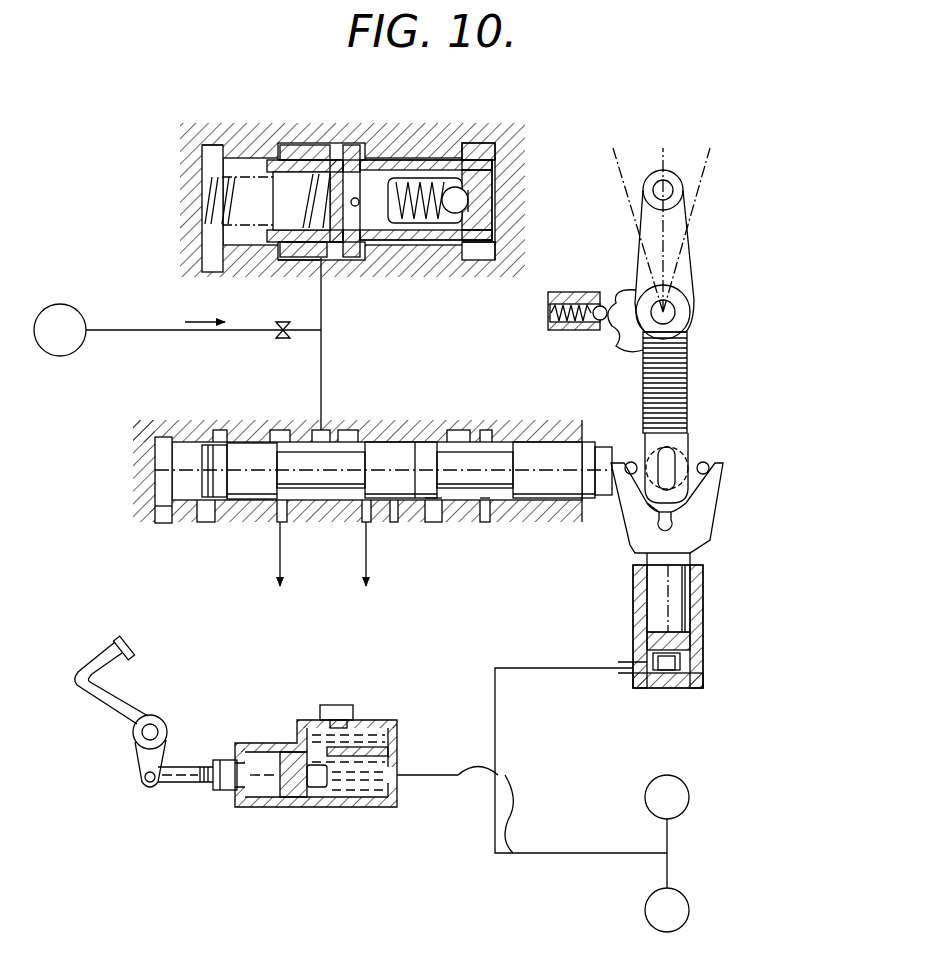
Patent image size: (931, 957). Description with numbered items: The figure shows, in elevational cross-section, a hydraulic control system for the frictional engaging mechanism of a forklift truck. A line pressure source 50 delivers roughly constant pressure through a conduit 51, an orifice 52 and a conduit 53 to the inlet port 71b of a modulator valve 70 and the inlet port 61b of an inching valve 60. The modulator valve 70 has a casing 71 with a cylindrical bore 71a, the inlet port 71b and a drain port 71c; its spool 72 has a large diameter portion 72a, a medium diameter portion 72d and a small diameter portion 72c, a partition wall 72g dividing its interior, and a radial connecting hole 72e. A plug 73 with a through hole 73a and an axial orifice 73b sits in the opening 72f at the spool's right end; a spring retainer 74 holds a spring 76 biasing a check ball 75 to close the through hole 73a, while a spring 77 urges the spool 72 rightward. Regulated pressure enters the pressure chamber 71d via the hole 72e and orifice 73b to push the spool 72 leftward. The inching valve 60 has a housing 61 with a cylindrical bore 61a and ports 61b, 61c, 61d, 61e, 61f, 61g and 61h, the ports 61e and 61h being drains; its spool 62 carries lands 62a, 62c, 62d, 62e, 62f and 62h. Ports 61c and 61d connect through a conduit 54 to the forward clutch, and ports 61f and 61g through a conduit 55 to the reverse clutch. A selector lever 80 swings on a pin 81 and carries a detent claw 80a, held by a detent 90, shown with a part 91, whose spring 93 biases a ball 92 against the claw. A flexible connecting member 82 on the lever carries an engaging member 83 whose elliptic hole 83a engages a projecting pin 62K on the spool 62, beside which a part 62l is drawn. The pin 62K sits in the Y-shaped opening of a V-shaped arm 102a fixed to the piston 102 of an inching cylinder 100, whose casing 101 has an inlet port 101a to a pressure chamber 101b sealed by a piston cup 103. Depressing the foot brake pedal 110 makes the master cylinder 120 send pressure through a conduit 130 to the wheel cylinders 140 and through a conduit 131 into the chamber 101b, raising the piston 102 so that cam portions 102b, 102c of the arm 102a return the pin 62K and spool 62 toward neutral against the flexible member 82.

The line pressure source 50 is at (76, 312).
The conduit 51 is at (140, 331).
The orifice 52 is at (278, 336).
The conduit 53 is at (321, 332).
The conduit 54 is at (280, 560).
The conduit 55 is at (366, 566).
The inching/selector valve 60 is at (342, 502).
The housing 61 is at (383, 483).
The cylindrical bore 61a is at (345, 436).
The inlet port 61b is at (318, 428).
The port 61c is at (281, 518).
The port 61d is at (192, 508).
The drain port 61e is at (150, 510).
The port 61f is at (393, 512).
The port 61g is at (436, 510).
The drain port 61h is at (485, 512).
The spool 62 is at (552, 437).
The large diameter land 62a is at (240, 445).
The small diameter land 62c is at (207, 500).
The medium diameter land 62d is at (160, 470).
The large diameter land 62e is at (380, 512).
The small diameter land 62f is at (430, 507).
The land 62h is at (495, 510).
The projecting pin 62K is at (628, 462).
The spool pin 62l is at (670, 468).
The modulator valve 70 is at (347, 192).
The casing 71 is at (390, 160).
The cylindrical bore 71a is at (240, 150).
The inlet port 71b is at (305, 258).
The drain port 71c is at (212, 262).
The pressure chamber 71d is at (475, 150).
The spool 72 is at (425, 175).
The large diameter portion 72a is at (348, 170).
The small diameter portion 72c is at (303, 148).
The medium diameter portion 72d is at (290, 165).
The radial connecting hole 72e is at (350, 258).
The opening 72f is at (478, 255).
The partition wall 72g is at (417, 185).
The plug 73 is at (475, 195).
The through hole 73a is at (470, 205).
The axial orifice 73b is at (495, 168).
The spring retainer 74 is at (490, 137).
The check ball 75 is at (472, 230).
The spring 76 is at (357, 208).
The spring 77 is at (212, 200).
The selector lever 80 is at (653, 316).
The detent claw 80a is at (622, 335).
The pin 81 is at (668, 312).
The flexible connecting member 82 is at (688, 360).
The engaging member 83 is at (707, 440).
The elliptic hole 83a is at (700, 463).
The detent 90 is at (556, 287).
The detent housing 91 is at (550, 300).
The ball 92 is at (602, 306).
The spring 93 is at (555, 320).
The inching cylinder 100 is at (671, 539).
The casing 101 is at (637, 612).
The inlet port 101a is at (640, 648).
The pressure chamber 101b is at (680, 668).
The piston 102 is at (671, 511).
The V-shaped arm 102a is at (690, 520).
The cam portion 102b is at (645, 503).
The cam portion 102c is at (658, 525).
The piston cup 103 is at (690, 640).
The foot brake pedal 110 is at (128, 702).
The master cylinder 120 is at (372, 713).
The conduit 130 is at (495, 777).
The conduit 131 is at (495, 718).
The wheel cylinders 140 is at (692, 806).